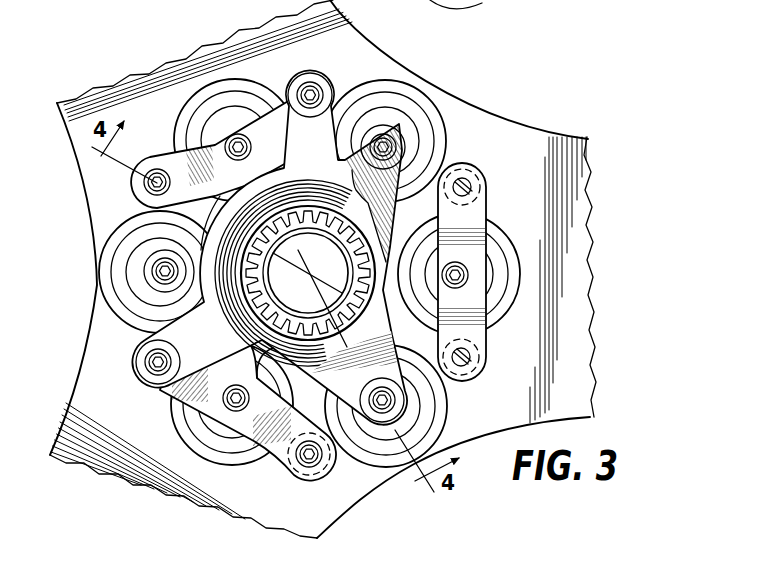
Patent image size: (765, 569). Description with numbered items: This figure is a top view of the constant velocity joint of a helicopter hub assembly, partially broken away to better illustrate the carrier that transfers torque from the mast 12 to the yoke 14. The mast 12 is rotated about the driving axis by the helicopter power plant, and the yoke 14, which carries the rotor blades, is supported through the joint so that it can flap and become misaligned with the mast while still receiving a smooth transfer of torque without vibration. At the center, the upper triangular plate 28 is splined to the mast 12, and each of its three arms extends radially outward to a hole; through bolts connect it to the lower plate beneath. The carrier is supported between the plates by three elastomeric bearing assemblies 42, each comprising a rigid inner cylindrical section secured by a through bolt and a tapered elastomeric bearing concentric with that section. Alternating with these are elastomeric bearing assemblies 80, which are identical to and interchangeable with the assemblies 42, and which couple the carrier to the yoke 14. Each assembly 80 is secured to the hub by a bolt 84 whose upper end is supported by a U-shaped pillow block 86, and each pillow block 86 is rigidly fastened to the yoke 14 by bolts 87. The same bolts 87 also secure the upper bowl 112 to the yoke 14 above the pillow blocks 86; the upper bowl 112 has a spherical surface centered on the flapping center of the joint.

The mast 12 is at (347, 257).
The yoke 14 is at (455, 93).
The upper triangular plate 28 is at (334, 366).
The elastomeric bearing assemblies 42 is at (384, 80).
The elastomeric bearing assemblies 80 is at (246, 96).
The bolt 84 is at (468, 272).
The pillow block 86 is at (491, 189).
The bolts 87 is at (463, 178).
The upper bowl 112 is at (209, 222).